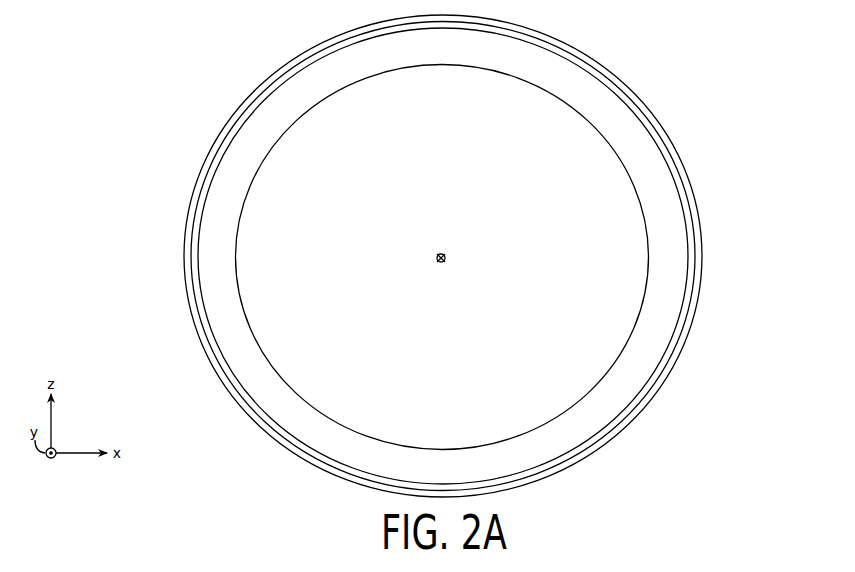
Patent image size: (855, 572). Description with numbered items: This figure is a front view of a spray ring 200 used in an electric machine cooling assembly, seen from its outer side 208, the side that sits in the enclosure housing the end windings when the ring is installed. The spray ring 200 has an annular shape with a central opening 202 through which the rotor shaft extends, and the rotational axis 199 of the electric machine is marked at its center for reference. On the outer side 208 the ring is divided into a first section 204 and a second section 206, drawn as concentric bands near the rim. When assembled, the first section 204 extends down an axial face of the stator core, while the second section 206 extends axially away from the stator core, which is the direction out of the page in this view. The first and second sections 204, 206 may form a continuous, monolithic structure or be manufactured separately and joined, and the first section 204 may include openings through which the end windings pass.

The rotational axis 199 is at (441, 263).
The spray ring 200 is at (147, 64).
The central opening 202 is at (381, 177).
The first section 204 is at (419, 53).
The second section 206 is at (379, 26).
The outer side 208 is at (211, 142).